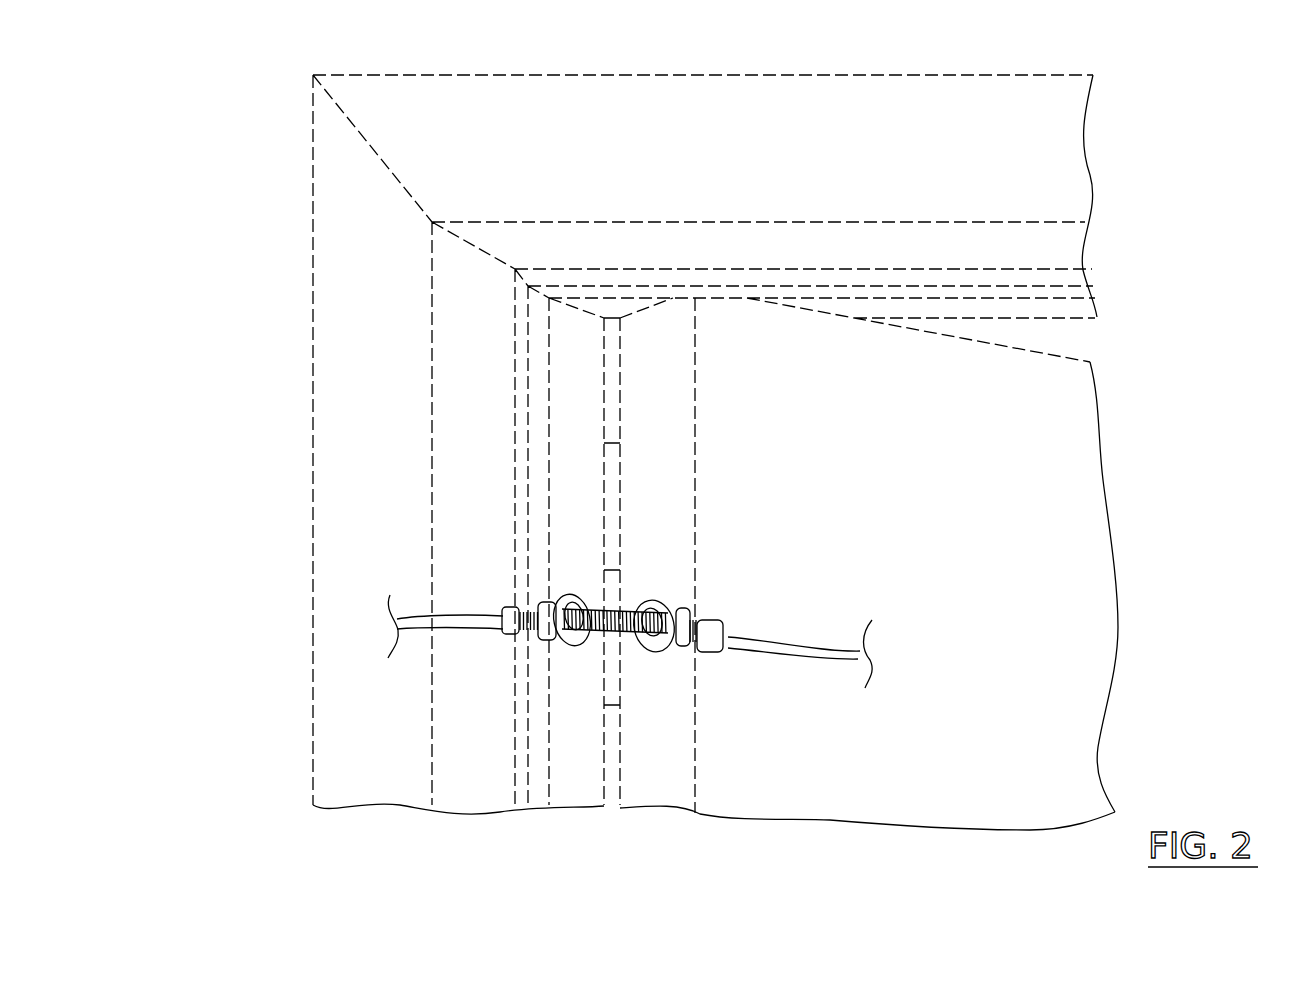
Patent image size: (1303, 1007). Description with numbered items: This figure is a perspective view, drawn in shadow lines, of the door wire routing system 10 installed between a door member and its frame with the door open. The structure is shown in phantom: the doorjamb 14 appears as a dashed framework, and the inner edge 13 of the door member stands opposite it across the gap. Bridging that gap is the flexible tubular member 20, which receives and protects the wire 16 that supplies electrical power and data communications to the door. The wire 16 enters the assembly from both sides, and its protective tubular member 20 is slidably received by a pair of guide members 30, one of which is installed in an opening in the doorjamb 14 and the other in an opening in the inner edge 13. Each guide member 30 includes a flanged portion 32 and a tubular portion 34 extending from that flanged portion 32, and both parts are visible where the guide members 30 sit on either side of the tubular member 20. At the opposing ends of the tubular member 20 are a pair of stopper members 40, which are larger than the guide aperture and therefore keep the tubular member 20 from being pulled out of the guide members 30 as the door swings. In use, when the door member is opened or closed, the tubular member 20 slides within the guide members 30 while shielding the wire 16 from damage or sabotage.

The door wire routing system 10 is at (280, 446).
The inner edge 13 is at (653, 327).
The doorjamb 14 is at (562, 313).
The wire 16 is at (417, 620).
The flexible tubular member 20 is at (677, 692).
The guide members 30 is at (580, 648).
The flanged portion 32 is at (570, 645).
The tubular portion 34 is at (540, 610).
The stopper members 40 is at (507, 637).